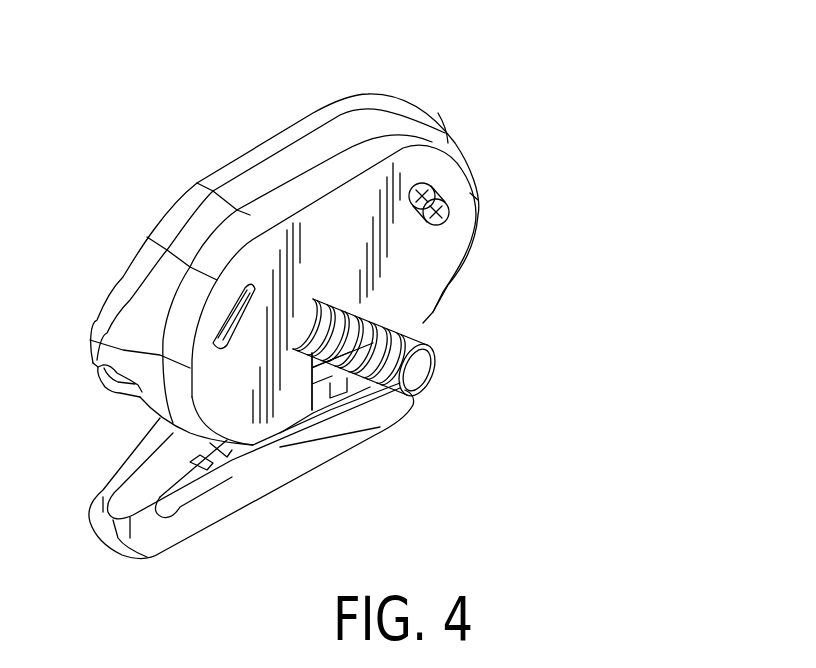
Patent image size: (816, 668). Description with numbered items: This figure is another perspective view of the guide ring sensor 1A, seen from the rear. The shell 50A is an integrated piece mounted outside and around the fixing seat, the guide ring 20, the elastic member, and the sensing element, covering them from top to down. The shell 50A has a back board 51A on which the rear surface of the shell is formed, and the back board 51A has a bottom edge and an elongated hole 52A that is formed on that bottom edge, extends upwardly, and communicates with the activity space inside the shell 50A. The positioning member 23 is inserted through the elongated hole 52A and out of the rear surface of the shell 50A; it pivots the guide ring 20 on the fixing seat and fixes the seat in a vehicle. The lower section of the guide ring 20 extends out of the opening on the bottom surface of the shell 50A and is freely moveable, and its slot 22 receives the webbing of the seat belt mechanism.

The guide ring sensor 1A is at (473, 95).
The shell 50A is at (252, 148).
The back board 51A is at (290, 403).
The elongated hole 52A is at (330, 410).
The positioning member 23 is at (383, 332).
The guide ring 20 is at (203, 541).
The slot 22 is at (217, 470).